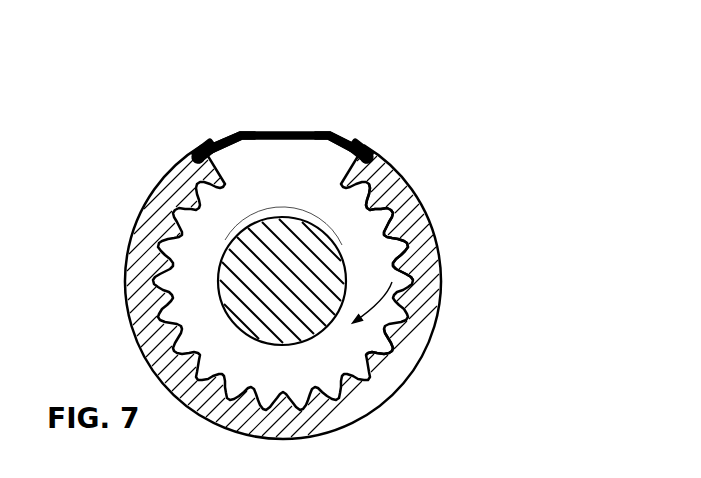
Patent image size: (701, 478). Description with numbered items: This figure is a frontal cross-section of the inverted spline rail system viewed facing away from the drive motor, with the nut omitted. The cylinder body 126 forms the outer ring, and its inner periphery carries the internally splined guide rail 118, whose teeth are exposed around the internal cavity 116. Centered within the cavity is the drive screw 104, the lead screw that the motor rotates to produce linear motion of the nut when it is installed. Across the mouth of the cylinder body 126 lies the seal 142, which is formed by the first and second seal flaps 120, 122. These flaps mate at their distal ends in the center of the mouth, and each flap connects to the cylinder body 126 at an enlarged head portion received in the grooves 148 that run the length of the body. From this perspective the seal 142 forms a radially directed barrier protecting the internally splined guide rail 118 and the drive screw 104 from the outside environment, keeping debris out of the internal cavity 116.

The drive screw 104 is at (325, 254).
The internal cavity 116 is at (410, 278).
The internally splined guide rail 118 is at (389, 335).
The first seal flap 120 is at (236, 130).
The second seal flap 122 is at (322, 132).
The cylinder body 126 is at (393, 388).
The seal 142 is at (281, 131).
The grooves 148 is at (198, 150).